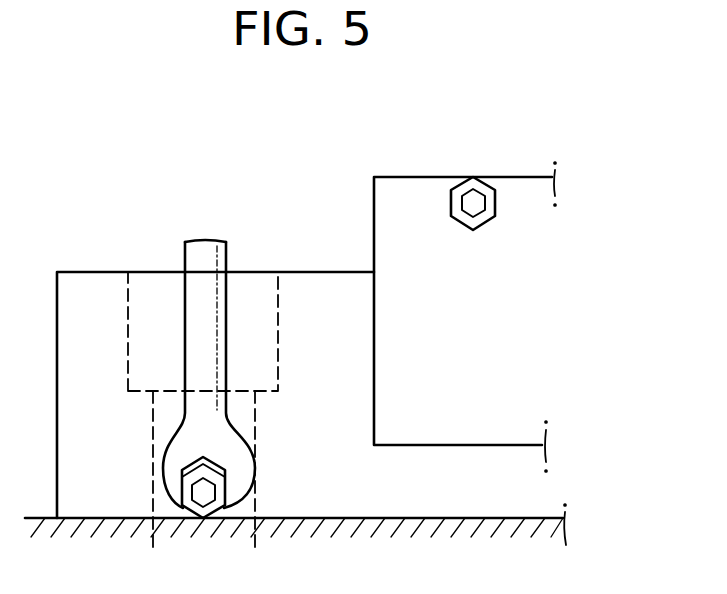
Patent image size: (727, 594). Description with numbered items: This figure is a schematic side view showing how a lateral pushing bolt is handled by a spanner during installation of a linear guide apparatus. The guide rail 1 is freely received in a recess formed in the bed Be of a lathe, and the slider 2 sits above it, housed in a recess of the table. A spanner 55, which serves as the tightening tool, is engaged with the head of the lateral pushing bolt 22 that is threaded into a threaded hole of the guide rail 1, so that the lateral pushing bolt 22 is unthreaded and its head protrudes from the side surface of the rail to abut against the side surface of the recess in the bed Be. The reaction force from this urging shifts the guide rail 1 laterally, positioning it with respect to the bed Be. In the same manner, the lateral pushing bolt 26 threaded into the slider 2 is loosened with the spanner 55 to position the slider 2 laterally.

The guide rail 1 is at (86, 287).
The slider 2 is at (413, 187).
The lateral pushing bolt 22 is at (198, 510).
The lateral pushing bolt 26 is at (485, 182).
The spanner 55 is at (213, 267).
The bed Be is at (513, 518).